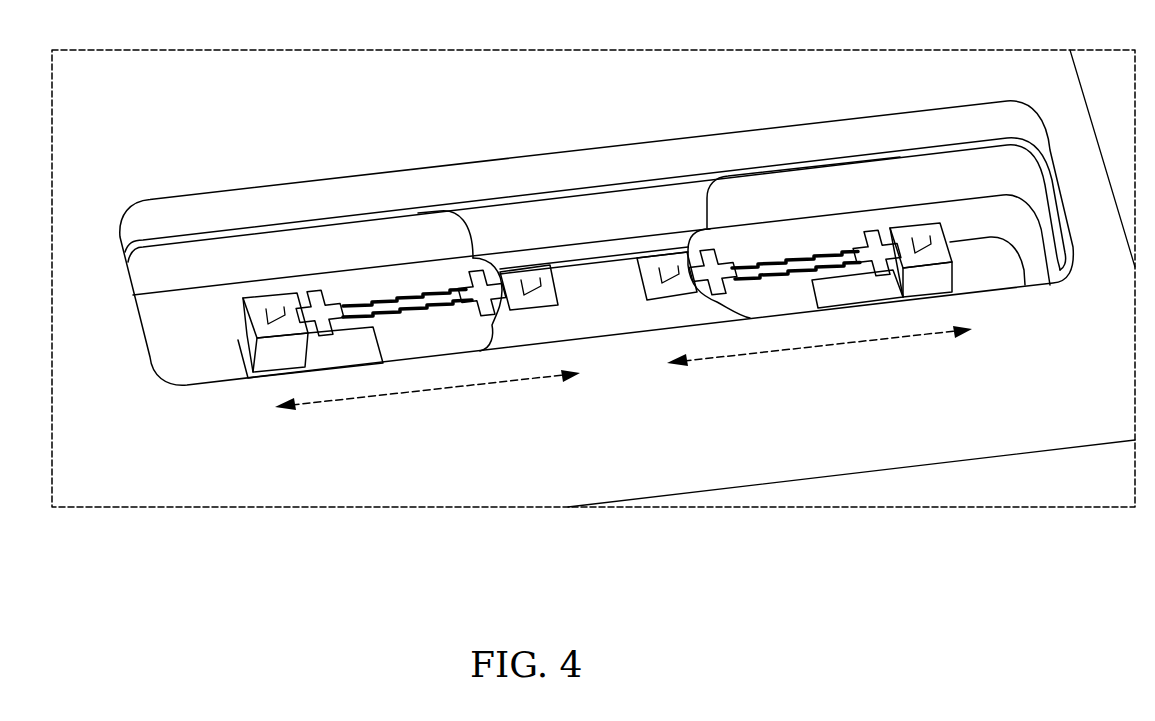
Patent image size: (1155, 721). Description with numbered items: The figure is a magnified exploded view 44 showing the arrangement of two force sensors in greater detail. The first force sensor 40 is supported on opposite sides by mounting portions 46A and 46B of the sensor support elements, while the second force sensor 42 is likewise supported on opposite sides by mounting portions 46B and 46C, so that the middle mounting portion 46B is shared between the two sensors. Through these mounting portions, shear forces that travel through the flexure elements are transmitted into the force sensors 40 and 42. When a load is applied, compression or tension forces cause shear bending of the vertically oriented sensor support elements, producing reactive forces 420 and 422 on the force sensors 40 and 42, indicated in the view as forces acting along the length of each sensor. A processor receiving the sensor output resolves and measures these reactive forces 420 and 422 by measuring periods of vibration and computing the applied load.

The exploded view 44 is at (137, 50).
The mounting portion 46A is at (262, 280).
The force sensor 40 is at (397, 276).
The mounting portion 46B is at (568, 208).
The force sensor 42 is at (802, 238).
The mounting portion 46C is at (914, 204).
The reactive force 420 is at (427, 391).
The reactive force 422 is at (818, 349).